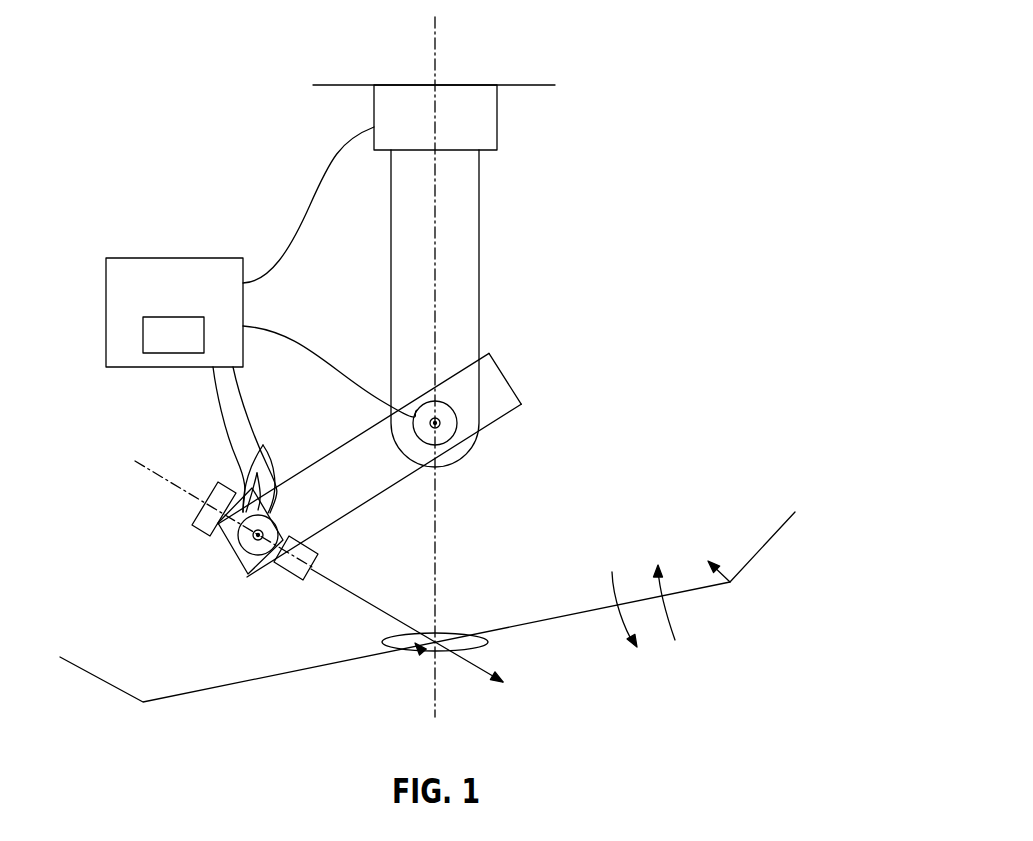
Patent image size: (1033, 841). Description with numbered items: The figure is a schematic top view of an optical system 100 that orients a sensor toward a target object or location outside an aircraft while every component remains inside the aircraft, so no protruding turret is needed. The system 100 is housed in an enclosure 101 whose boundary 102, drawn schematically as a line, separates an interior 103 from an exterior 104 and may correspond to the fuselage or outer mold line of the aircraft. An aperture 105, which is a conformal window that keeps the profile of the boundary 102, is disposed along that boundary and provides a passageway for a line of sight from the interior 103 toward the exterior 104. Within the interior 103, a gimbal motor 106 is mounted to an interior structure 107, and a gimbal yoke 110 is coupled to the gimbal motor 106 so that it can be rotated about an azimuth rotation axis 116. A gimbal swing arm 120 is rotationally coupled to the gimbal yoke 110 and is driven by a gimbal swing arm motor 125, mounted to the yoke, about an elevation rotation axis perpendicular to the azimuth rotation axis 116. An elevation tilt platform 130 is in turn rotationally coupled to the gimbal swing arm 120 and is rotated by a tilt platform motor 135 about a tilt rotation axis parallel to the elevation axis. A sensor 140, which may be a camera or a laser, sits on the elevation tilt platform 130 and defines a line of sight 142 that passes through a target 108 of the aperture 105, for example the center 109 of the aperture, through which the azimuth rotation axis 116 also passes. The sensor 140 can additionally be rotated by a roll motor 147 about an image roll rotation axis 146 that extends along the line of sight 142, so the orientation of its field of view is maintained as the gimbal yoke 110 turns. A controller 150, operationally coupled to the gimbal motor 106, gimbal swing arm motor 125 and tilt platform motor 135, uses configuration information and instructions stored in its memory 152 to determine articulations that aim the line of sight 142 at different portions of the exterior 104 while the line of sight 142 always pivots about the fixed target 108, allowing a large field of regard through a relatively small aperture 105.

The system 100 is at (592, 42).
The enclosure 101 is at (728, 583).
The boundary 102 is at (705, 590).
The interior 103 is at (675, 619).
The exterior 104 is at (613, 593).
The aperture 105 is at (480, 638).
The gimbal motor 106 is at (497, 133).
The interior structure 107 is at (525, 85).
The target 108 is at (437, 640).
The center 109 is at (420, 648).
The gimbal yoke 110 is at (480, 183).
The azimuth rotation axis 116 is at (435, 47).
The gimbal swing arm 120 is at (510, 386).
The gimbal swing arm motor 125 is at (445, 402).
The elevation tilt platform 130 is at (235, 557).
The tilt platform motor 135 is at (263, 445).
The sensor 140 is at (287, 573).
The line of sight 142 is at (345, 590).
The image roll rotation axis 146 is at (157, 472).
The roll motor 147 is at (208, 533).
The controller 150 is at (198, 301).
The memory 152 is at (198, 349).